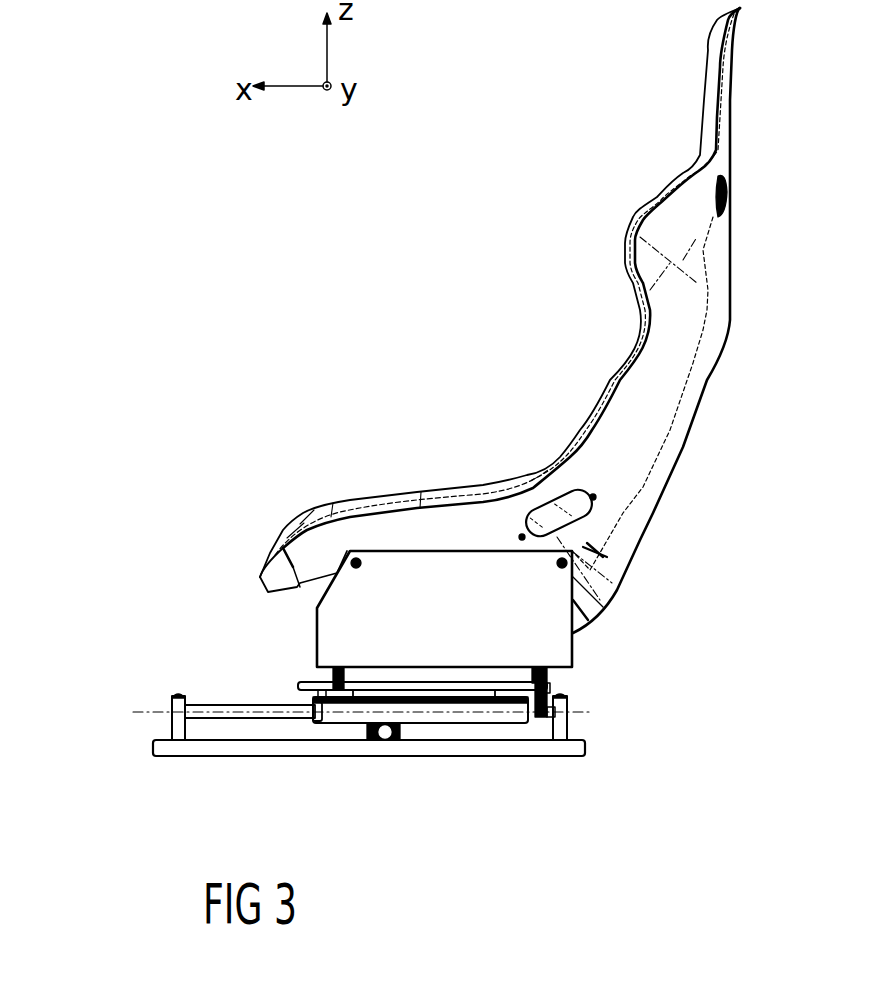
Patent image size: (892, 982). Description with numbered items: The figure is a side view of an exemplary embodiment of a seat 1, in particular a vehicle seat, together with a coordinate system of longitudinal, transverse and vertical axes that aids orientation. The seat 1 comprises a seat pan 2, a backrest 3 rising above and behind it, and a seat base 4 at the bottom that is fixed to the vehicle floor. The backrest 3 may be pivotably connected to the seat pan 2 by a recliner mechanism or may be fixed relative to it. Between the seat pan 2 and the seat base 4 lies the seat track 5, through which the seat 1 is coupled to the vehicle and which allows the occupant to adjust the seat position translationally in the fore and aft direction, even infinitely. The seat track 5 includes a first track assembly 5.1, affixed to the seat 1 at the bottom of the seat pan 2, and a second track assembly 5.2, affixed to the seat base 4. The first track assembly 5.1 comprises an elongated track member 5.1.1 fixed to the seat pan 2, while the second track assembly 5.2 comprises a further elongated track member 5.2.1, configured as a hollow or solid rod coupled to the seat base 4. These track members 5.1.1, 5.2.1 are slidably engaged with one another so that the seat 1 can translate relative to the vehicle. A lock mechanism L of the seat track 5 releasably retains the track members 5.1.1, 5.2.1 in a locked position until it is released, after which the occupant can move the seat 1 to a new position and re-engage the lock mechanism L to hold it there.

The seat 1 is at (478, 264).
The seat pan 2 is at (363, 537).
The backrest 3 is at (723, 263).
The seat base 4 is at (360, 748).
The seat track 5 is at (592, 728).
The first track assembly 5.1 is at (298, 686).
The elongated track member 5.1.1 is at (458, 688).
The second track assembly 5.2 is at (507, 717).
The further elongated track member 5.2.1 is at (173, 710).
The lock mechanism L is at (427, 730).